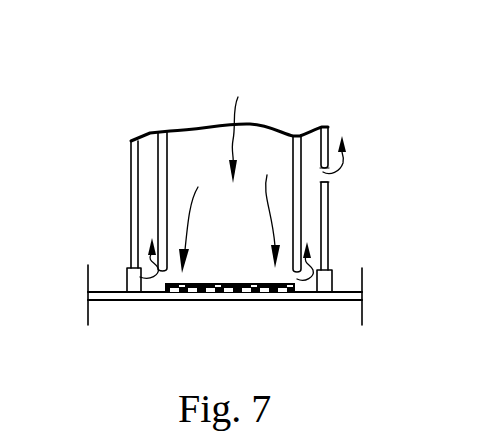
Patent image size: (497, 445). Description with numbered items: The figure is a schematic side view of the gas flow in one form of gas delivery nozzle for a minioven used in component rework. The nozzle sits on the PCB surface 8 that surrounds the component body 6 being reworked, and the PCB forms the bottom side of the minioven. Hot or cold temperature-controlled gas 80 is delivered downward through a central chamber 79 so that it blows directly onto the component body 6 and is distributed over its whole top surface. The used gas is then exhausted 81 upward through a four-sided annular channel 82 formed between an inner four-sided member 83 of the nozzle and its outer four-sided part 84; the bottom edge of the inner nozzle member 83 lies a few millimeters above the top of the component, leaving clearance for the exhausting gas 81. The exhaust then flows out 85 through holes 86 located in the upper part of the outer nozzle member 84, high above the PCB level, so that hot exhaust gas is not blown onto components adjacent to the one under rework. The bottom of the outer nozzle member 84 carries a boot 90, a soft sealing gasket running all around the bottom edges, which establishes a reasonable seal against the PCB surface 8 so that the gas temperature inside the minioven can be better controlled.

The component body 6 is at (233, 291).
The PCB surface 8 is at (348, 292).
The central chamber 79 is at (252, 150).
The temperature-controlled gas 80 is at (235, 107).
The exhausted gas 81 is at (312, 296).
The annular channel 82 is at (150, 190).
The inner nozzle member 83 is at (297, 143).
The outer nozzle member 84 is at (323, 240).
The exhaust outflow 85 is at (347, 145).
The holes 86 is at (323, 180).
The boot 90 is at (0, 50).